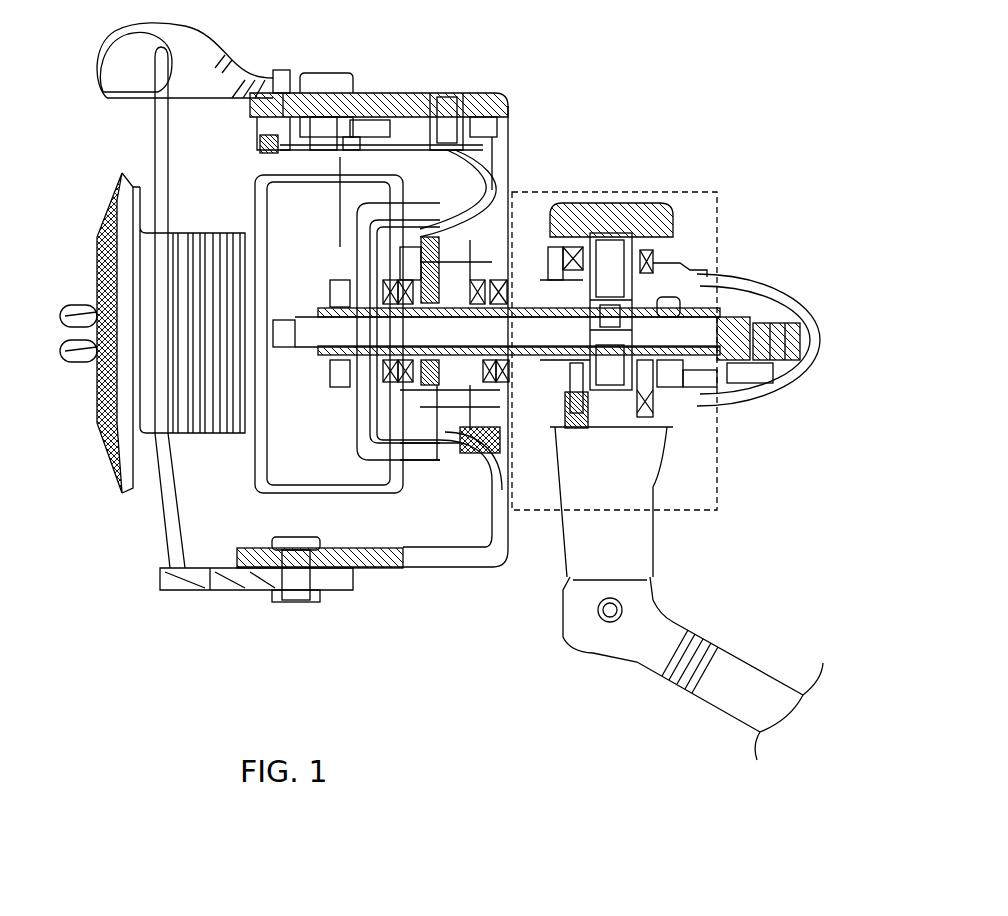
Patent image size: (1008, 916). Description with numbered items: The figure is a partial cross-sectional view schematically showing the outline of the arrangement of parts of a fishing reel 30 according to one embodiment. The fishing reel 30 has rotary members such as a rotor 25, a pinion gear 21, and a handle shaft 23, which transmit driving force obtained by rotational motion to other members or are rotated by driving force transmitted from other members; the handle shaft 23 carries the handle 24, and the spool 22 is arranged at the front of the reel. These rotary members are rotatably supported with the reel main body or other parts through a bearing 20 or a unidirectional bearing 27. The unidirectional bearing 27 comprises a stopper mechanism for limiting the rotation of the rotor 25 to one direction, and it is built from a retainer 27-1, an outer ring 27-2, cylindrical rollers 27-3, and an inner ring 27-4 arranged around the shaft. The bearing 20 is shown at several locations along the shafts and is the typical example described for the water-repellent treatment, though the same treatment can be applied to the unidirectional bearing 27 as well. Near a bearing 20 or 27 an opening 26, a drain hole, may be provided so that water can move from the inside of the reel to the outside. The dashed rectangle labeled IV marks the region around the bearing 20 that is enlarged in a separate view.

The bearing 20 is at (420, 607).
The pinion gear 21 is at (362, 368).
The spool 22 is at (207, 446).
The handle shaft 23 is at (610, 418).
The handle 24 is at (637, 550).
The rotor 25 is at (403, 97).
The opening (drain hole) 26 is at (468, 392).
The unidirectional bearing 27 is at (420, 397).
The retainer 27-1 is at (417, 303).
The outer ring 27-2 is at (433, 212).
The roller 27-3 is at (437, 275).
The inner ring 27-4 is at (512, 235).
The fishing reel 30 is at (697, 121).
The section IV is at (733, 213).